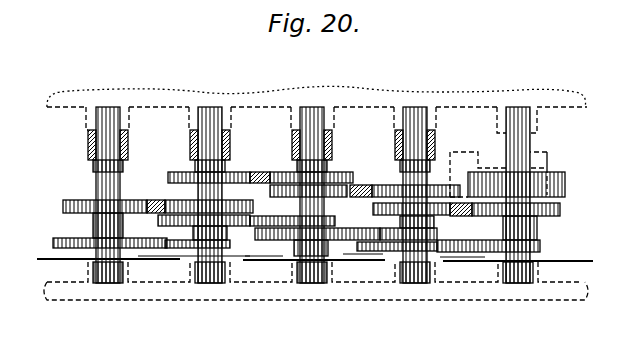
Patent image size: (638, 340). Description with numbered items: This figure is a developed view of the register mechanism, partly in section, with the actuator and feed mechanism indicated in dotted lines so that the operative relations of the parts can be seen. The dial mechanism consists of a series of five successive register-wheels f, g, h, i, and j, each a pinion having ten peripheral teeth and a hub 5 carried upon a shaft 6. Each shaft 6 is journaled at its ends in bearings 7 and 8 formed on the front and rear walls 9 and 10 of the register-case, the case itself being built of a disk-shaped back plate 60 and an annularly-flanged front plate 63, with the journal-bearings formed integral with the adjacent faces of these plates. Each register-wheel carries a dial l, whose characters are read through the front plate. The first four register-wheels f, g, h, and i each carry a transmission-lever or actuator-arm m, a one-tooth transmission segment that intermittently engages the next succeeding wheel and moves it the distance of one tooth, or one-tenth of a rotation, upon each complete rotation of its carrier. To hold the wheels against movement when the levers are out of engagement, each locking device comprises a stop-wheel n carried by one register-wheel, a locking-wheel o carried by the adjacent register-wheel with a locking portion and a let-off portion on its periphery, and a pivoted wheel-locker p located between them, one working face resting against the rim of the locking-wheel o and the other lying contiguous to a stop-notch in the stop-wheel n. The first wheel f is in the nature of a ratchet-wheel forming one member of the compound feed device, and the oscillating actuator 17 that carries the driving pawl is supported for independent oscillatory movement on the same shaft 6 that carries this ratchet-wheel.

The hub 5 is at (93, 222).
The shaft 6 is at (108, 159).
The bearing 7 is at (88, 270).
The bearing 8 is at (86, 125).
The front wall 9 is at (257, 284).
The rear wall 10 is at (262, 107).
The actuator 17 is at (470, 152).
The back plate 60 is at (381, 89).
The front plate 63 is at (354, 301).
The stop-wheel n is at (63, 206).
The locking-wheel o is at (180, 201).
The wheel-locker p is at (156, 213).
The transmission-lever m is at (175, 240).
The register-wheel i is at (255, 216).
The register-wheel h is at (337, 227).
The register-wheel j is at (53, 242).
The register-wheel g is at (377, 252).
The register-wheel f is at (558, 193).
The dial l is at (37, 259).